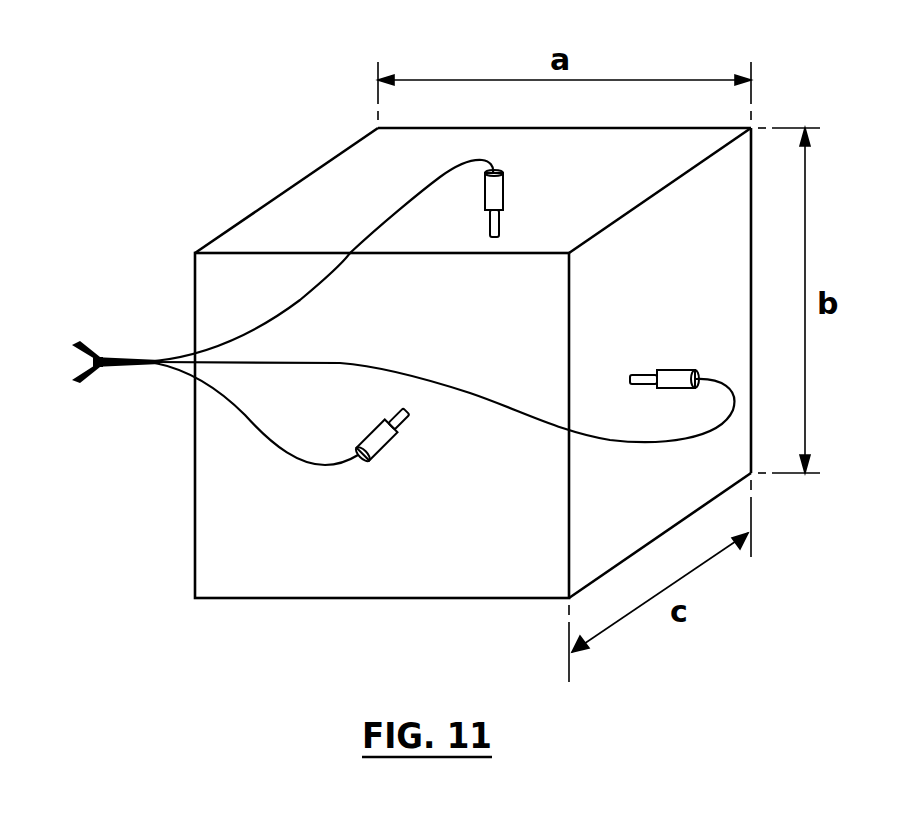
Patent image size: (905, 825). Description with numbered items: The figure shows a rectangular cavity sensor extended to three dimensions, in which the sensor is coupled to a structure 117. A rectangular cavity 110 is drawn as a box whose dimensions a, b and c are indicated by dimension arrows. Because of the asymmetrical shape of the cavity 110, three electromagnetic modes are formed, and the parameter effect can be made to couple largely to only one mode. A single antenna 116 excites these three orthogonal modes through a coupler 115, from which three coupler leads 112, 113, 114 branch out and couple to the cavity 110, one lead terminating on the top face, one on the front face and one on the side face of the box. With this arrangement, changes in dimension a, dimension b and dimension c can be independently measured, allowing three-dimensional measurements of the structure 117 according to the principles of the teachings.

The cavity 110 is at (316, 565).
The coupler lead 112 is at (384, 446).
The coupler lead 113 is at (503, 197).
The coupler lead 114 is at (668, 369).
The coupler 115 is at (348, 363).
The antenna 116 is at (86, 376).
The structure 117 is at (62, 554).